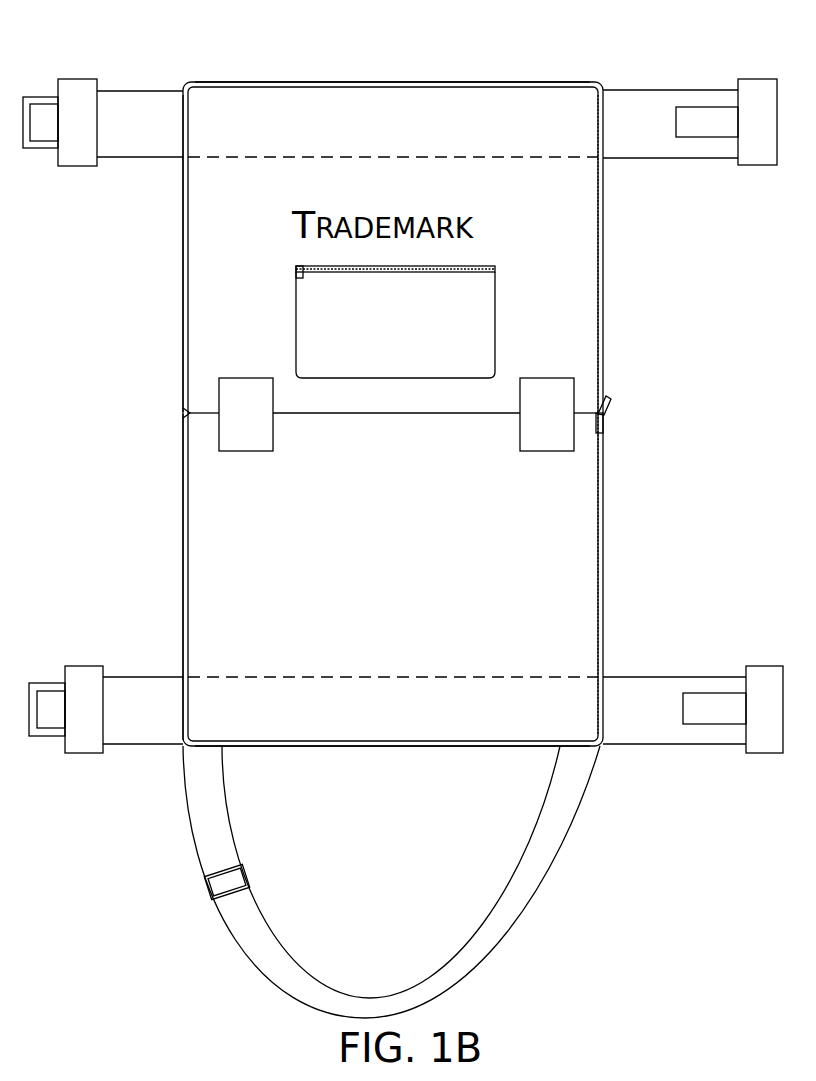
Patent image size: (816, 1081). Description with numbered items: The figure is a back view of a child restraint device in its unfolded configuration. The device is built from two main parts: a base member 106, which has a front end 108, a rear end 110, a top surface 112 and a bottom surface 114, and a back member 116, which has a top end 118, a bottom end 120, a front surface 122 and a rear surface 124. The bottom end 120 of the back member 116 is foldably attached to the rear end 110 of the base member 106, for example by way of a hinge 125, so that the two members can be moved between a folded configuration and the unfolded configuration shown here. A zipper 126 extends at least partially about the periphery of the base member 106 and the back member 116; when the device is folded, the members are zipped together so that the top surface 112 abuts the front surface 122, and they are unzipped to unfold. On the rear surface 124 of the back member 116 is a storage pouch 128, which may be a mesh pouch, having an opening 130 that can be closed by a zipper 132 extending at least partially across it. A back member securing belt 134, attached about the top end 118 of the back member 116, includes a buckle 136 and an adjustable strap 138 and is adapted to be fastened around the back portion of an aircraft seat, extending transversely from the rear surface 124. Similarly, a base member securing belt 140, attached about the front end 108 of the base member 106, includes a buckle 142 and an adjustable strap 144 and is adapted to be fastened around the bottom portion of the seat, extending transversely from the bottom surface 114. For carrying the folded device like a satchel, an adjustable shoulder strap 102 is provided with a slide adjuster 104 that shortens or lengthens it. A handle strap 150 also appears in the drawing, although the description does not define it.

The adjustable shoulder strap 102 is at (548, 882).
The slide adjuster 104 is at (207, 890).
The base member 106 is at (628, 554).
The front end 108 is at (380, 773).
The rear end 110 is at (176, 421).
The top surface 112 is at (182, 540).
The bottom surface 114 is at (393, 595).
The back member 116 is at (628, 212).
The top end 118 is at (455, 59).
The bottom end 120 is at (627, 368).
The front surface 122 is at (182, 250).
The rear surface 124 is at (393, 184).
The hinge 125 is at (540, 452).
The zipper 126 is at (605, 494).
The storage pouch 128 is at (395, 325).
The opening 130 is at (303, 266).
The zipper 132 is at (495, 268).
The back member securing belt 134 is at (632, 90).
The buckle 136 is at (85, 79).
The adjustable strap 138 is at (676, 124).
The base member securing belt 140 is at (633, 677).
The buckle 142 is at (82, 666).
The adjustable strap 144 is at (683, 705).
The handle strap 150 is at (398, 418).